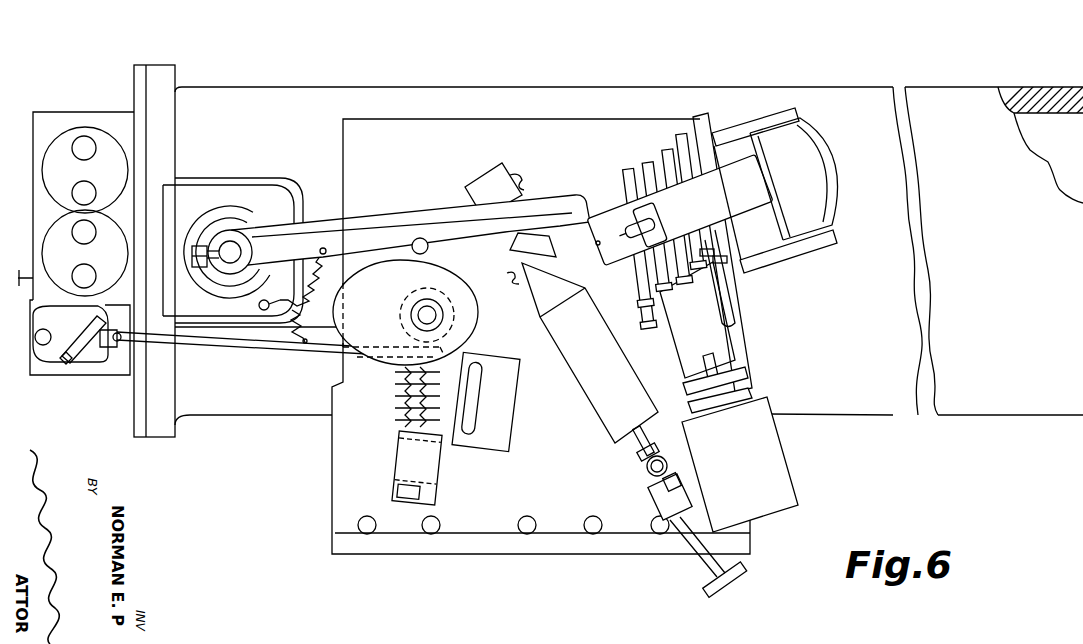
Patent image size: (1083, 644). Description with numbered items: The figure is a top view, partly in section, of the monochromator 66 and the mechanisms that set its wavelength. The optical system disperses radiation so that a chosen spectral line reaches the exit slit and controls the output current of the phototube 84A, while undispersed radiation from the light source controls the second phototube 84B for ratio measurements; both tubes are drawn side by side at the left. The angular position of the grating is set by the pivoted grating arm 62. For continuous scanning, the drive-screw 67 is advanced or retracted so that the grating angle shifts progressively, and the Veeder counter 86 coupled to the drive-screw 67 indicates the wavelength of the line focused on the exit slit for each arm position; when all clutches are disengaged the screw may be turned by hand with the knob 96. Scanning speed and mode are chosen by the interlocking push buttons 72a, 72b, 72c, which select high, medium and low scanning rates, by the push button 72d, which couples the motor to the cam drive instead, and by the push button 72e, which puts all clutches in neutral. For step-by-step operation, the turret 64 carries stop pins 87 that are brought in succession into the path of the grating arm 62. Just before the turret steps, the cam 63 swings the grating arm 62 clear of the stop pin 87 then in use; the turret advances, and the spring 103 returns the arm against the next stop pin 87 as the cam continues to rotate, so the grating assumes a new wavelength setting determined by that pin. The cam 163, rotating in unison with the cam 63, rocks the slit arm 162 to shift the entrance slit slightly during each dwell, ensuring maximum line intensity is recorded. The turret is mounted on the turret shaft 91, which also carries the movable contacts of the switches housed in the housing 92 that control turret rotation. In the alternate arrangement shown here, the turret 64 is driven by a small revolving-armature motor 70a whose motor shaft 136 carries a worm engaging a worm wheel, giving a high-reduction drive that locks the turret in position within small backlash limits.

The grating arm 62 is at (390, 213).
The cam 63 is at (393, 363).
The turret 64 is at (745, 203).
The monochromator 66 is at (896, 364).
The drive-screw 67 is at (518, 240).
The motor 70a is at (820, 172).
The push button 72a is at (527, 534).
The push button 72b is at (593, 534).
The push button 72c is at (660, 534).
The push button 72d is at (431, 534).
The push button 72e is at (367, 534).
The phototube 84A is at (66, 139).
The second phototube 84B is at (45, 250).
The Veeder counter 86 is at (655, 493).
The stop pins 87 is at (648, 168).
The turret shaft 91 is at (713, 380).
The housing 92 is at (774, 450).
The knob 96 is at (730, 582).
The spring 103 is at (310, 263).
The motor shaft 136 is at (655, 225).
The slit arm 162 is at (262, 349).
The cam 163 is at (453, 315).